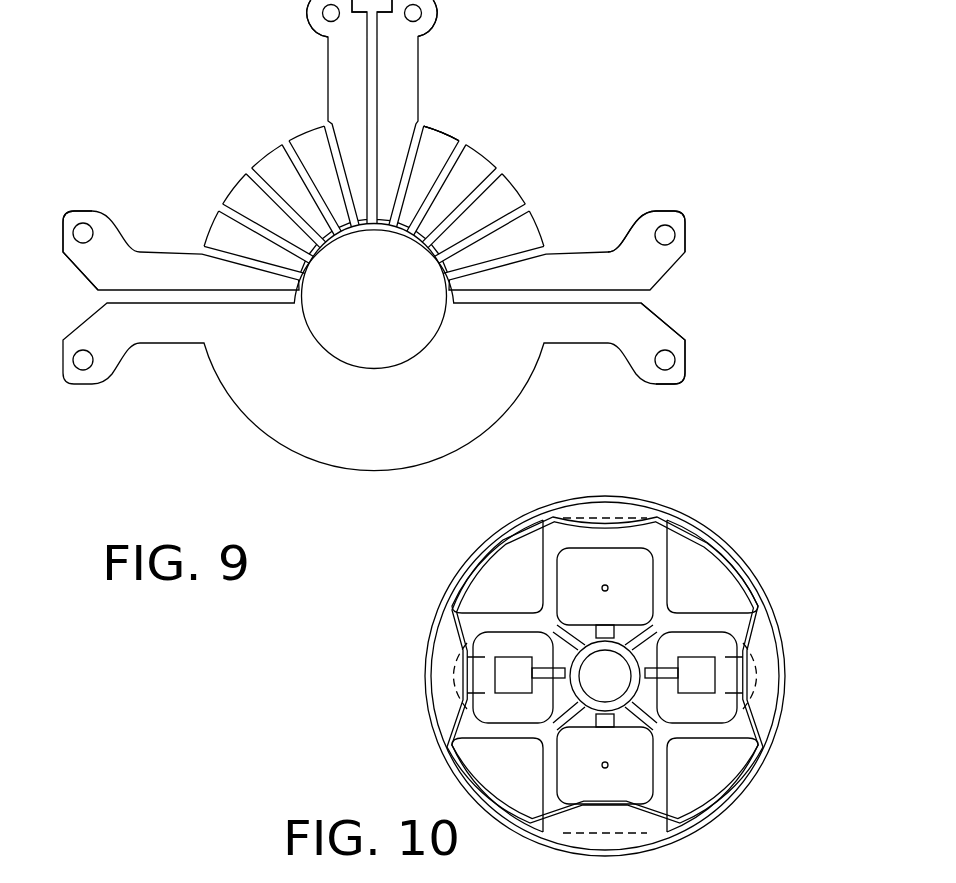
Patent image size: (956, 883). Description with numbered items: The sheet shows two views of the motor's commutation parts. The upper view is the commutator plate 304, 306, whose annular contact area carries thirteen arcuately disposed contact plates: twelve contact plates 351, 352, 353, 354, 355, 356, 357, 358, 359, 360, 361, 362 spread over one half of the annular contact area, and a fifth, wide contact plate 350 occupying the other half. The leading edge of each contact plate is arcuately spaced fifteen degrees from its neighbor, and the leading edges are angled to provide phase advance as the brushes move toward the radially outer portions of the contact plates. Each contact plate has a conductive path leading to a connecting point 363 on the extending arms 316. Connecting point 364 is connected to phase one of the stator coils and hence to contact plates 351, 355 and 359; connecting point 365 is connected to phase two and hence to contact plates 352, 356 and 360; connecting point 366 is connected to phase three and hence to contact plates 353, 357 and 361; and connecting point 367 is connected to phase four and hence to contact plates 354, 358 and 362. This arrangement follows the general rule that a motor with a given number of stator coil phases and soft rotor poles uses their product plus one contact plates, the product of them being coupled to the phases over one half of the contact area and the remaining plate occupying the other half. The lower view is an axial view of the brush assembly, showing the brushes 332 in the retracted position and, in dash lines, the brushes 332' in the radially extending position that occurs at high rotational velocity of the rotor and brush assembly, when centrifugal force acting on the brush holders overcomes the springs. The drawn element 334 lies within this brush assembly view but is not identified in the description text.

In FIG. 9, the contact plate 350 is at (283, 447).
In FIG. 9, the contact plate 351 is at (167, 258).
In FIG. 9, the contact plate 352 is at (213, 235).
In FIG. 9, the contact plate 353 is at (233, 193).
In FIG. 9, the contact plate 354 is at (270, 162).
In FIG. 9, the contact plate 355 is at (303, 138).
In FIG. 9, the contact plate 356 is at (328, 70).
In FIG. 9, the contact plate 357 is at (412, 70).
In FIG. 9, the contact plate 358 is at (442, 140).
In FIG. 9, the contact plate 359 is at (480, 163).
In FIG. 9, the contact plate 360 is at (510, 195).
In FIG. 9, the contact plate 361 is at (525, 225).
In FIG. 9, the contact plate 362 is at (598, 256).
In FIG. 9, the connecting point 363 is at (683, 372).
In FIG. 9, the connecting point 364 is at (67, 230).
In FIG. 9, the connecting point 365 is at (308, 6).
In FIG. 9, the connecting point 366 is at (437, 6).
In FIG. 9, the connecting point 367 is at (675, 213).
In FIG. 9, the extending arms 316 is at (677, 215).
In FIG. 9, the commutator plate 304 is at (438, 115).
In FIG. 9, the commutator plate 306 is at (438, 115).
In FIG. 10, the brushes 332 is at (742, 703).
In FIG. 10, the brushes in radially extending position 332' is at (652, 676).
In FIG. 10, the square component 334 is at (700, 663).